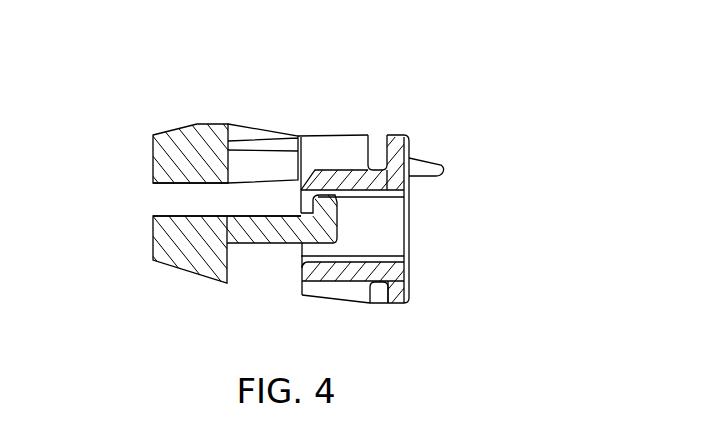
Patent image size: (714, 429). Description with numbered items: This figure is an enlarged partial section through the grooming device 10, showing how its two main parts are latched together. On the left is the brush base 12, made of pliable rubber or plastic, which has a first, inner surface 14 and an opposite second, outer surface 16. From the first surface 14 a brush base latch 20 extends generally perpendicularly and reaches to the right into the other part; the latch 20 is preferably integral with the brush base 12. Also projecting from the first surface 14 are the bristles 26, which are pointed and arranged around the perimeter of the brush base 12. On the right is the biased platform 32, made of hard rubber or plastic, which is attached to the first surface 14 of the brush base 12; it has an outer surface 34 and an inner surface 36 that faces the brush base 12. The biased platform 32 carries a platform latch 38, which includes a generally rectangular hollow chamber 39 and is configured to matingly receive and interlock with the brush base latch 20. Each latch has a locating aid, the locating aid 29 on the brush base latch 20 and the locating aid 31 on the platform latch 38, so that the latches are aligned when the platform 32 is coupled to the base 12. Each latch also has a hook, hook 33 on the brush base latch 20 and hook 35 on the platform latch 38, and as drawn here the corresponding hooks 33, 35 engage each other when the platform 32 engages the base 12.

The grooming device 10 is at (432, 101).
The brush base 12 is at (154, 230).
The first, inner surface 14 is at (227, 283).
The second, outer surface 16 is at (153, 162).
The latch 20 is at (262, 243).
The bristles 26 is at (436, 163).
The locating aid 29 is at (291, 232).
The locating aid 31 is at (375, 166).
The biased platform 32 is at (398, 142).
The hook 33 is at (300, 192).
The outer surface 34 is at (415, 293).
The hook 35 is at (337, 228).
The inner surface 36 is at (298, 140).
The platform latch 38 is at (380, 197).
The hollow chamber 39 is at (378, 237).